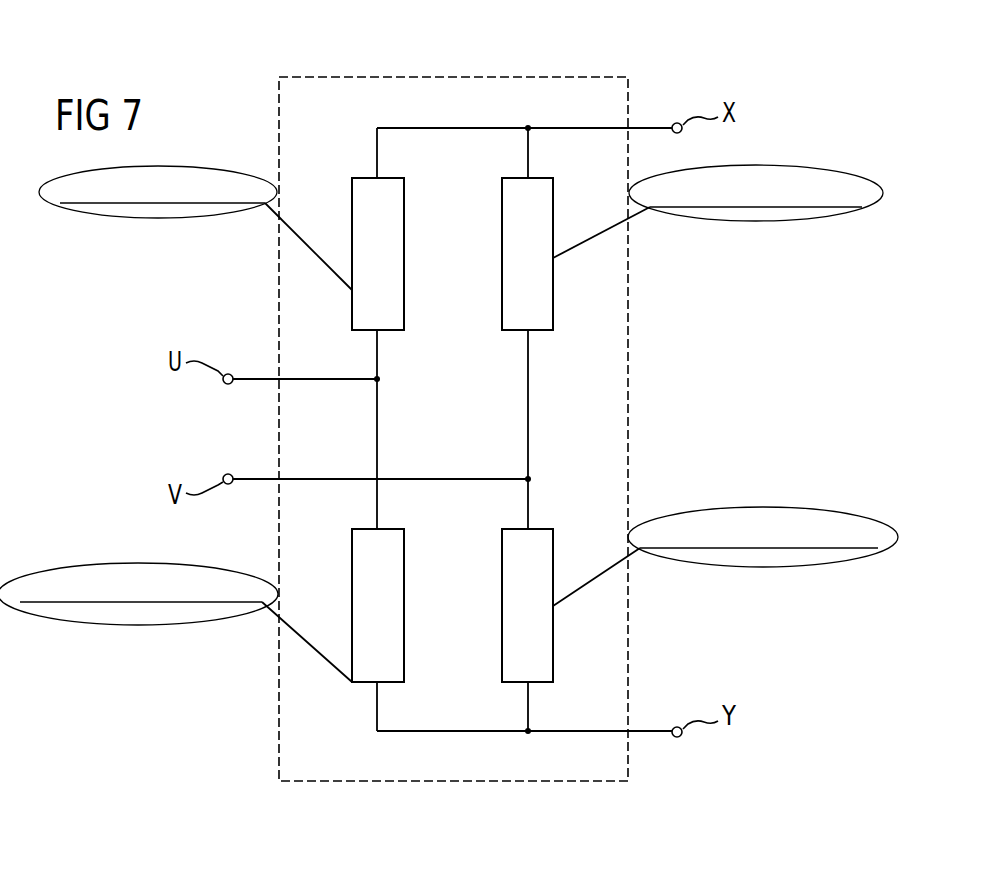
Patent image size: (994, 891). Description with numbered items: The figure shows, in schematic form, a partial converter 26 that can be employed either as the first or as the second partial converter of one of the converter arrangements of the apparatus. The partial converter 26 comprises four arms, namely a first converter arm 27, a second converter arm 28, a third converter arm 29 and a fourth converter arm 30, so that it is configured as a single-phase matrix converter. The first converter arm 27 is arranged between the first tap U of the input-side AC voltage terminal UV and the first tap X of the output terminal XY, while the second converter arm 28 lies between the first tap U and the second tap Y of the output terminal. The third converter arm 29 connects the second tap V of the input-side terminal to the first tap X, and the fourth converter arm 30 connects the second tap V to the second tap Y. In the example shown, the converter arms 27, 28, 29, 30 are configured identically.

The partial converter 26 is at (556, 77).
The first converter arm 27 is at (404, 260).
The second converter arm 28 is at (404, 613).
The third converter arm 29 is at (553, 260).
The fourth converter arm 30 is at (553, 613).